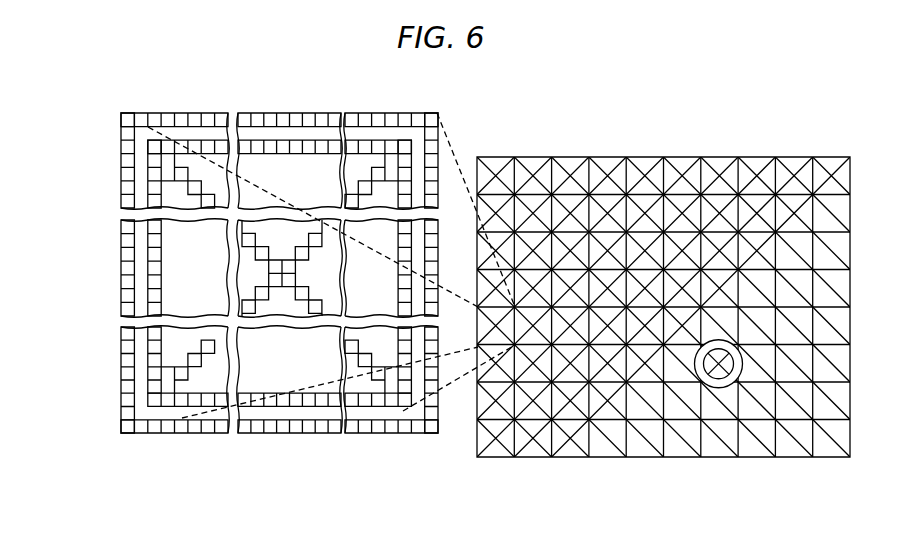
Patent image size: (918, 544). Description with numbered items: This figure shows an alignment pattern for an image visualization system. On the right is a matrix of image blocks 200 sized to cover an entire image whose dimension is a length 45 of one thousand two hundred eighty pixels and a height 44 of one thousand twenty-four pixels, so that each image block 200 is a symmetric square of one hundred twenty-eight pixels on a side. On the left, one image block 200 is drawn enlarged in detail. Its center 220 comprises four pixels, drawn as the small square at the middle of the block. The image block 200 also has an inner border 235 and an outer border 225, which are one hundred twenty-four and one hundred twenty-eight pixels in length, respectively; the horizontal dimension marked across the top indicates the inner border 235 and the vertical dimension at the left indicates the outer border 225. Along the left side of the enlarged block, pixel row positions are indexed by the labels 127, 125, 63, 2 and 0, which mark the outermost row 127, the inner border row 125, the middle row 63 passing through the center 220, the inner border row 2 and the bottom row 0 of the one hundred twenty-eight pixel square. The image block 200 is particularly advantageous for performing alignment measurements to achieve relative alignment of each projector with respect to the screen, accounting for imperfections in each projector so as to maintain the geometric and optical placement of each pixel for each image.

The image block 200 is at (207, 440).
The center of image block 220 is at (271, 289).
The inner border 235 is at (412, 107).
The outer border 225 is at (35, 412).
The row index 127 is at (116, 120).
The row index 125 is at (116, 144).
The row index 63 is at (264, 278).
The row index 2 is at (115, 400).
The row index 0 is at (115, 432).
The length 45 is at (850, 150).
The height 44 is at (868, 425).